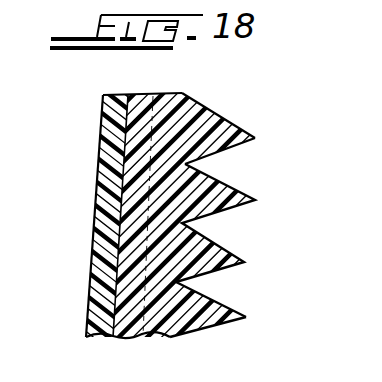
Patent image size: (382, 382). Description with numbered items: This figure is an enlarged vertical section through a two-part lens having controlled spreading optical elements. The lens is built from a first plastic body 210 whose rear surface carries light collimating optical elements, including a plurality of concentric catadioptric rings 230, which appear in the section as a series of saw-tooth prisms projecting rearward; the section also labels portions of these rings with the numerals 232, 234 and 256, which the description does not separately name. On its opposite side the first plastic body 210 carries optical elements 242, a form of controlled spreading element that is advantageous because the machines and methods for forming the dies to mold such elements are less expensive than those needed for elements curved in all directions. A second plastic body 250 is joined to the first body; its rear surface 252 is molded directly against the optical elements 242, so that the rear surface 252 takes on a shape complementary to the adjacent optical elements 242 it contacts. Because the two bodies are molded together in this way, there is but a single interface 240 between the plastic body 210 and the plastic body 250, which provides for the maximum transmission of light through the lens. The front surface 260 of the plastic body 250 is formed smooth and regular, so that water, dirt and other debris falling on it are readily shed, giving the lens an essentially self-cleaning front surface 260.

The first plastic body 210 is at (148, 97).
The catadioptric rings 230 is at (208, 240).
The lower tooth flank 232 is at (216, 326).
The tooth 234 is at (234, 126).
The interface 240 is at (147, 82).
The optical elements 242 is at (123, 161).
The plastic body 250 is at (104, 106).
The rear surface 252 is at (106, 335).
The front face 256 is at (210, 110).
The front surface 260 is at (90, 216).